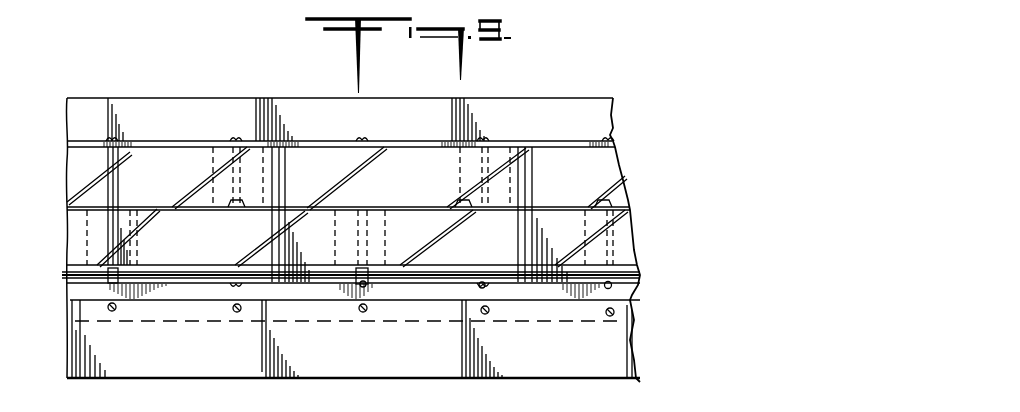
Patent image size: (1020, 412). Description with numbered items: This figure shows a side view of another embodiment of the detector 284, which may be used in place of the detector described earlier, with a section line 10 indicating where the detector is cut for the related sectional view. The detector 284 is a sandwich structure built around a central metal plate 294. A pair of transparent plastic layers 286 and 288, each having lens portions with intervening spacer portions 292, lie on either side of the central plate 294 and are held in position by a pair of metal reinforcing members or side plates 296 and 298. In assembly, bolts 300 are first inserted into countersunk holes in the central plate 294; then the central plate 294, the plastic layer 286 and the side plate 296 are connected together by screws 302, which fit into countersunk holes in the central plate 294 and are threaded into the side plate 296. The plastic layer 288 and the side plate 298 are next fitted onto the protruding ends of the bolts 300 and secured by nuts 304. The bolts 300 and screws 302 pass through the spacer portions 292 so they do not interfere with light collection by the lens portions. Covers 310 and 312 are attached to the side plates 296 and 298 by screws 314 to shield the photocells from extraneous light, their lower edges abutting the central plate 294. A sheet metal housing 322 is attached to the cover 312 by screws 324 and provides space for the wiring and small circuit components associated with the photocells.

The section line 10- 10 is at (257, 83).
The detector 284 is at (615, 93).
The cover 310 is at (67, 137).
The side plate 296 is at (616, 148).
The screws 314 is at (238, 139).
The transparent plastic layer 286 is at (622, 194).
The screws 302 is at (213, 171).
The central metal plate 294 is at (631, 208).
The spacer portions 292 is at (204, 222).
The bolts 300 is at (121, 238).
The transparent plastic layer 288 is at (629, 254).
The side plate 298 is at (638, 276).
The nuts 304 is at (110, 281).
The cover 312 is at (63, 277).
The screws 324 is at (117, 308).
The sheet metal housing 322 is at (626, 359).